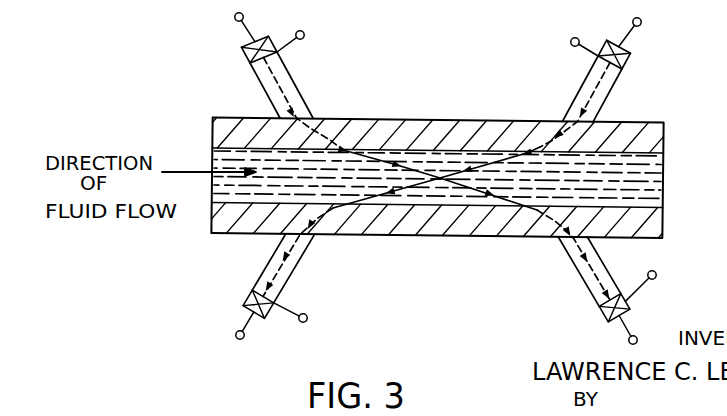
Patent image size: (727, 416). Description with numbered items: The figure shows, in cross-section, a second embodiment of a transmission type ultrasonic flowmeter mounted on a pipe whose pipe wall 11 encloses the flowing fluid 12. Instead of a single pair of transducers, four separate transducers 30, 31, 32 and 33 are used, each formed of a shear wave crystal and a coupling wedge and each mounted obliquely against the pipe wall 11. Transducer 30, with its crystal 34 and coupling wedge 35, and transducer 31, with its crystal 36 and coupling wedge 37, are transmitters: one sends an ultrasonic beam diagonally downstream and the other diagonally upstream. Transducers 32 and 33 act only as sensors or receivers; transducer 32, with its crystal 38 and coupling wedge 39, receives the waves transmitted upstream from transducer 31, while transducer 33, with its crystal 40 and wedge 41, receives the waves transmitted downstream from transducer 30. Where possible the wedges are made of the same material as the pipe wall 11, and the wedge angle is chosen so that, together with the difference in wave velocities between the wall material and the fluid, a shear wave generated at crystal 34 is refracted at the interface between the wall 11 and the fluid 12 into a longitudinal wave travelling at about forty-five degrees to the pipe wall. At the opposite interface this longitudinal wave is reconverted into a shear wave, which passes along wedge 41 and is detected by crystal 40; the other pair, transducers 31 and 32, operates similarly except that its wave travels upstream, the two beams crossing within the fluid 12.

The pipe wall 11 is at (445, 120).
The fluid 12 is at (663, 177).
The transducer 30 is at (277, 65).
The transducer 31 is at (607, 70).
The transducer 32 is at (287, 293).
The transducer 33 is at (604, 290).
The crystal 34 is at (241, 48).
The coupling wedge 35 is at (287, 68).
The crystal 36 is at (631, 54).
The coupling wedge 37 is at (584, 82).
The crystal 38 is at (264, 318).
The coupling wedge 39 is at (299, 260).
The crystal 40 is at (608, 322).
The wedge 41 is at (578, 270).